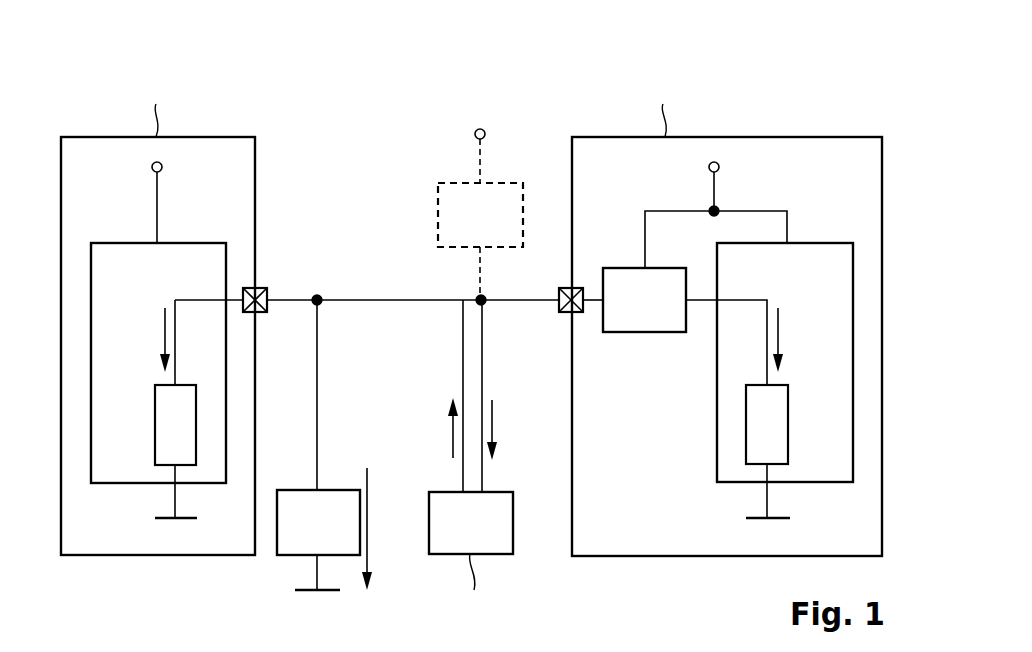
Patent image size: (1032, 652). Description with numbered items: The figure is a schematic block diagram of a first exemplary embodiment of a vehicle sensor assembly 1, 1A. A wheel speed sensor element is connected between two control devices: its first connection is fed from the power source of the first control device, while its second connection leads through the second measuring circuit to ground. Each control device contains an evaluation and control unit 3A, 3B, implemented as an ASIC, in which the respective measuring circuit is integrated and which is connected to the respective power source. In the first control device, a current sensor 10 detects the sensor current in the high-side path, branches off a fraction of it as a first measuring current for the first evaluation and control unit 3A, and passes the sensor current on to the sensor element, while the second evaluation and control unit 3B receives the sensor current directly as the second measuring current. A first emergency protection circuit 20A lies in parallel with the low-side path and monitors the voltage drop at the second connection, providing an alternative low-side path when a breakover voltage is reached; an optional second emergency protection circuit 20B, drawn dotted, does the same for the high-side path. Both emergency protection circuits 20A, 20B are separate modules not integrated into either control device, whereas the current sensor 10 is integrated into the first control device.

The sensor assembly 1 is at (781, 99).
The sensor assembly 1A is at (473, 328).
The first evaluation and control unit 3A is at (830, 243).
The second evaluation and control unit 3B is at (126, 243).
The current sensor 10 is at (616, 268).
The first emergency protection circuit 20A is at (287, 490).
The second emergency protection circuit 20B is at (438, 205).